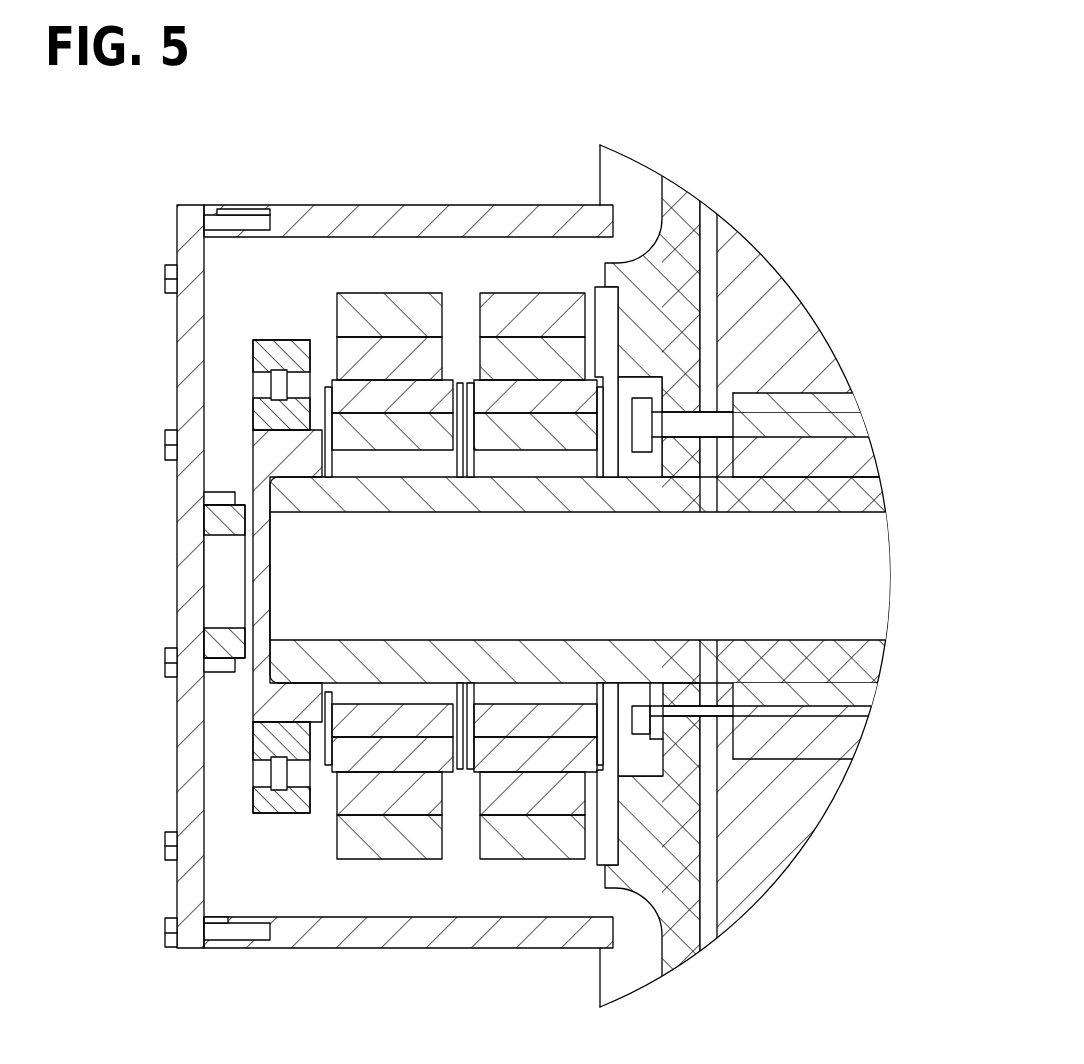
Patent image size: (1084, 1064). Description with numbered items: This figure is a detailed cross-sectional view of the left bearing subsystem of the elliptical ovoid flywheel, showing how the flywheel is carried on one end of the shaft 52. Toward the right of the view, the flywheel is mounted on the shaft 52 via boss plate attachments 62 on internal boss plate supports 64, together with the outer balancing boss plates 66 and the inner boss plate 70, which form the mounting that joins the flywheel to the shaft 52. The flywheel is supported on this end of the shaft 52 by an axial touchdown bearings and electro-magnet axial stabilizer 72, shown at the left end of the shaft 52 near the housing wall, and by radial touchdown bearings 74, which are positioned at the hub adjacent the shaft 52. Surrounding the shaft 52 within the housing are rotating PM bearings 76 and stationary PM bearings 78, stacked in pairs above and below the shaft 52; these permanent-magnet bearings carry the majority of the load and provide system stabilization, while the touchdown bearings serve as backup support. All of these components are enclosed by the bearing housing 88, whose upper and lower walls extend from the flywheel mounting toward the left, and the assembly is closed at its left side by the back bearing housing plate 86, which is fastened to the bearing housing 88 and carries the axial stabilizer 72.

The shaft 52 is at (882, 490).
The boss plate attachments 62 is at (868, 410).
The internal boss plate supports 64 is at (870, 445).
The outer balancing boss plates 66 is at (663, 228).
The inner boss plate 70 is at (720, 245).
The axial touchdown bearings and electro-magnet axial stabilizer 72 is at (200, 516).
The radial touchdown bearings 74 is at (285, 339).
The rotating PM bearings 76 is at (380, 292).
The stationary PM bearings 78 is at (500, 292).
The back bearing housing plate 86 is at (177, 808).
The bearing housing 88 is at (323, 948).